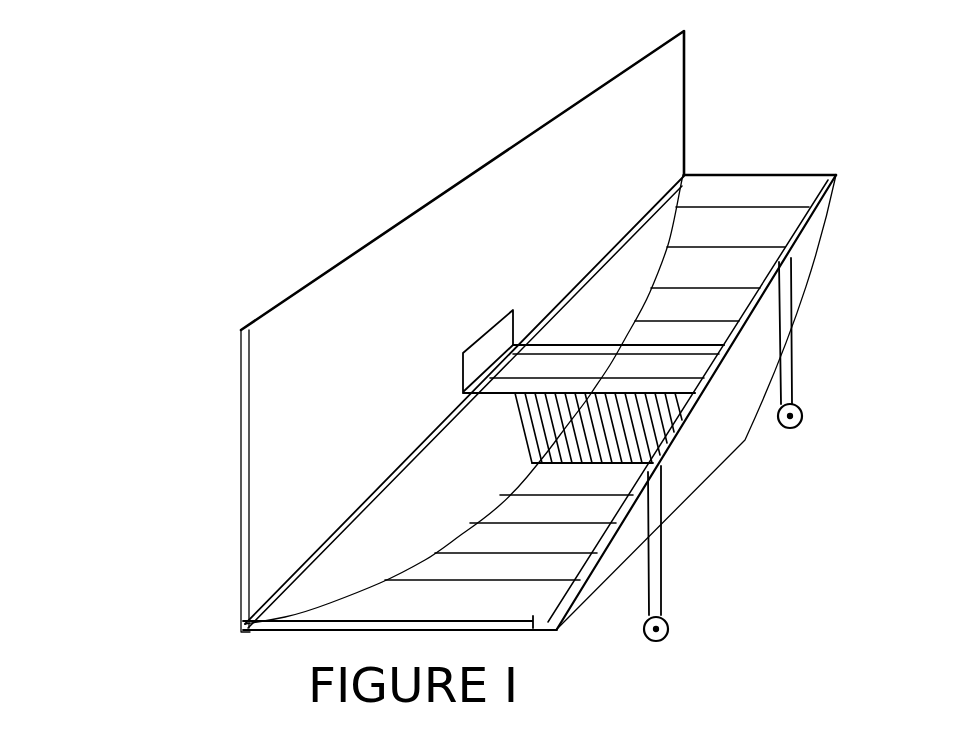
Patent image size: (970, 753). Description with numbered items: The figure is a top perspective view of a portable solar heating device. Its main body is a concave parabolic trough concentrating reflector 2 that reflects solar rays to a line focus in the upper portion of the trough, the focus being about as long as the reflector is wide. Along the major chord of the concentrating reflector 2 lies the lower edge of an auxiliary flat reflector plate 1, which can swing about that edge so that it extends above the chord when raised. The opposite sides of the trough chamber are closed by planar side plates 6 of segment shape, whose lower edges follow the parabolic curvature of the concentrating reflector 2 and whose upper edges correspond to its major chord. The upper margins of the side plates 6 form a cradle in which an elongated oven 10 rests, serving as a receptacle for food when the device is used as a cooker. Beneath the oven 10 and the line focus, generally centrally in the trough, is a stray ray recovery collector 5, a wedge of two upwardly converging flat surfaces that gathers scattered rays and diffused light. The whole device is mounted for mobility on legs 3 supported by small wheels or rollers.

The auxiliary flat reflector plate 1 is at (628, 141).
The concave parabolic trough concentrating reflector 2 is at (718, 234).
The legs 3 is at (808, 396).
The stray ray recovery collector 5 is at (624, 439).
The planar side plates 6 is at (725, 414).
The oven 10 is at (681, 367).